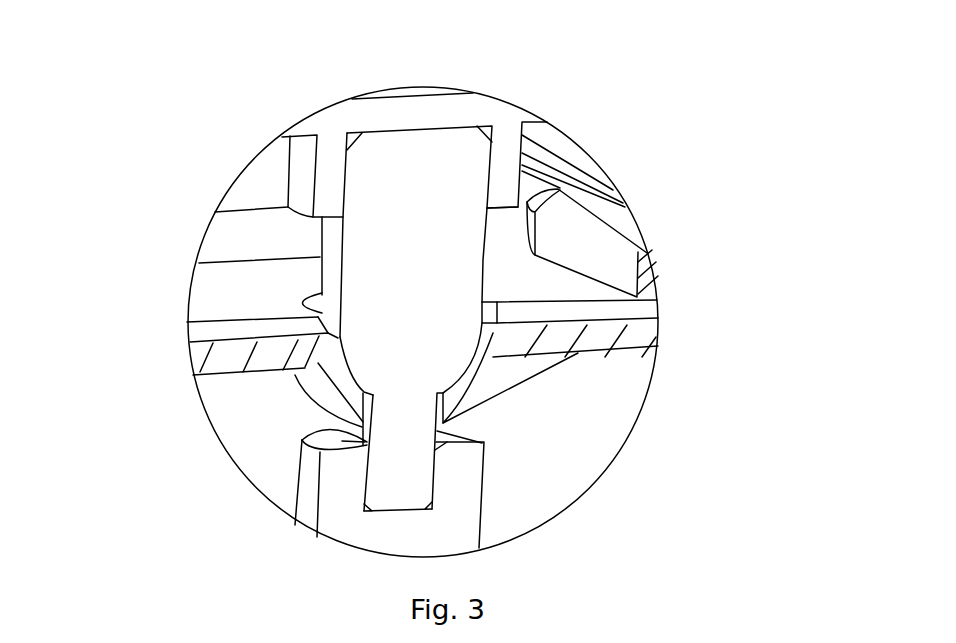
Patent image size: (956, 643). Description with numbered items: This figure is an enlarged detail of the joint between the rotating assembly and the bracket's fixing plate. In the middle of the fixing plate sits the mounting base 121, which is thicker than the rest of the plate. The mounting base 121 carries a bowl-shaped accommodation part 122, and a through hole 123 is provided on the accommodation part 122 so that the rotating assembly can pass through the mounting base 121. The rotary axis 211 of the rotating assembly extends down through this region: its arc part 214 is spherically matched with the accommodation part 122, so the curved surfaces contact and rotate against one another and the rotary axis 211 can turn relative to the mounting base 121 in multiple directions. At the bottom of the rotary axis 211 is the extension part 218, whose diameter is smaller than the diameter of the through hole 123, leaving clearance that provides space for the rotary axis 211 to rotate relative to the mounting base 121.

The rotary axis 211 is at (378, 258).
The arc part 214 is at (350, 360).
The extension part 218 is at (302, 442).
The mounting base 121 is at (495, 360).
The accommodation part 122 is at (495, 362).
The through hole 123 is at (460, 416).